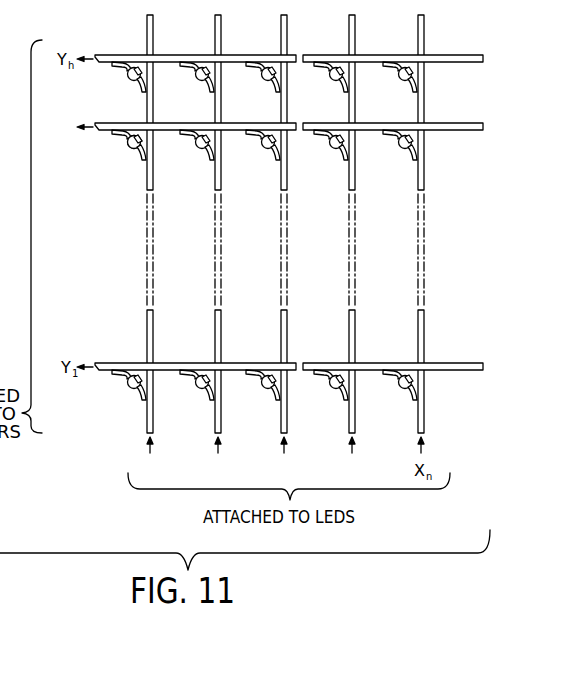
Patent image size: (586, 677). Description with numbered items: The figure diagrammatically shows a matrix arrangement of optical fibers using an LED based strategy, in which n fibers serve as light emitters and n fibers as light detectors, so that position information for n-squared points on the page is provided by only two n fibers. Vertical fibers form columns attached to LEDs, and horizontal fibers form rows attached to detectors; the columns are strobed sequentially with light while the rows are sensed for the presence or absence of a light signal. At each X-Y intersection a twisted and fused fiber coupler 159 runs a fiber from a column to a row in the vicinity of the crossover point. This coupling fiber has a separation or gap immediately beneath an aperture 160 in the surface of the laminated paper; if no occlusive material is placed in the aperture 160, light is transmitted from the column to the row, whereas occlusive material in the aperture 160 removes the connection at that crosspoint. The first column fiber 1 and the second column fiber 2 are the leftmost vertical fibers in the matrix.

The twisted and fused fiber coupler 159 is at (133, 159).
The aperture 160 is at (142, 137).
The X1 column conductor 1 is at (152, 248).
The X2 column conductor 2 is at (220, 248).